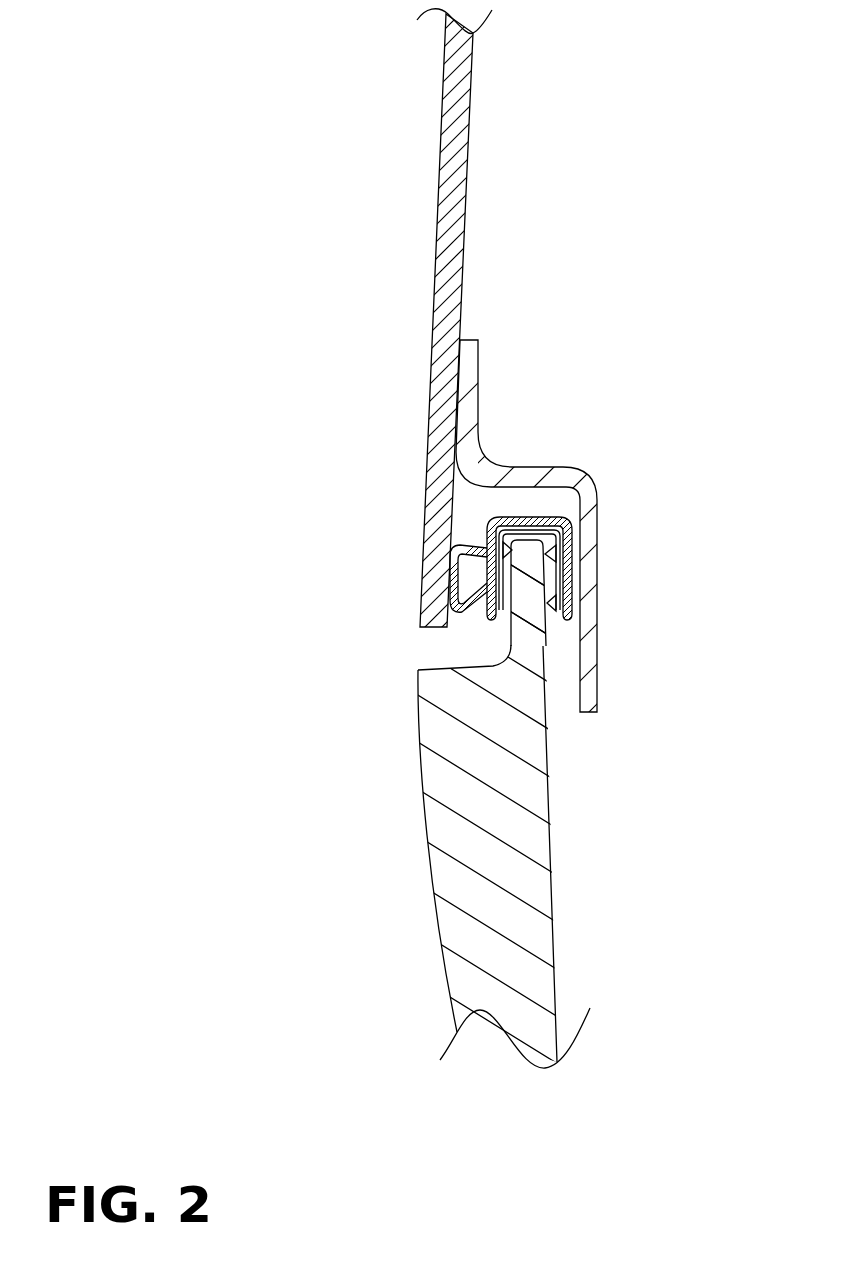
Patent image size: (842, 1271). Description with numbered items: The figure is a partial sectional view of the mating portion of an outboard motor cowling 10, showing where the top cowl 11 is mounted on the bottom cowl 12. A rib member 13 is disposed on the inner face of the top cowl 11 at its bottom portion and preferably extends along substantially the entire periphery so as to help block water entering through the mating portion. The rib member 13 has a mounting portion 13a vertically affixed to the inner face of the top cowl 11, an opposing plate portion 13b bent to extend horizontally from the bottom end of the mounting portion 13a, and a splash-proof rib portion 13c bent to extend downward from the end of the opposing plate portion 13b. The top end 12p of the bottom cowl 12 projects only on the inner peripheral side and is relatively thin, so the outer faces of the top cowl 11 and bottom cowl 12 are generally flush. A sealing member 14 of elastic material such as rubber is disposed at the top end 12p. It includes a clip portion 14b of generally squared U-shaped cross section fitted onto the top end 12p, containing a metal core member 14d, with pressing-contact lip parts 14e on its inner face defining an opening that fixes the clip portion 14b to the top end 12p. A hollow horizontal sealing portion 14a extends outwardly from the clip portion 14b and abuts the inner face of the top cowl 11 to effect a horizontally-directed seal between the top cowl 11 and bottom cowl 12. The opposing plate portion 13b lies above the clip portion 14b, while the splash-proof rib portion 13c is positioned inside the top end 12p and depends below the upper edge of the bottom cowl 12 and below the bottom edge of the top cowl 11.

The cowling 10 is at (356, 150).
The top cowl 11 is at (438, 258).
The bottom cowl 12 is at (523, 807).
The top end of the bottom cowl 12p is at (527, 642).
The rib member 13 is at (451, 400).
The mounting portion 13a is at (468, 386).
The opposing plate portion 13b is at (537, 478).
The splash-proof rib portion 13c is at (588, 700).
The sealing member 14 is at (564, 488).
The horizontal sealing portion 14a is at (452, 548).
The clip portion 14b is at (575, 607).
The metal core member 14d is at (494, 530).
The pressing-contact lip parts 14e is at (573, 553).